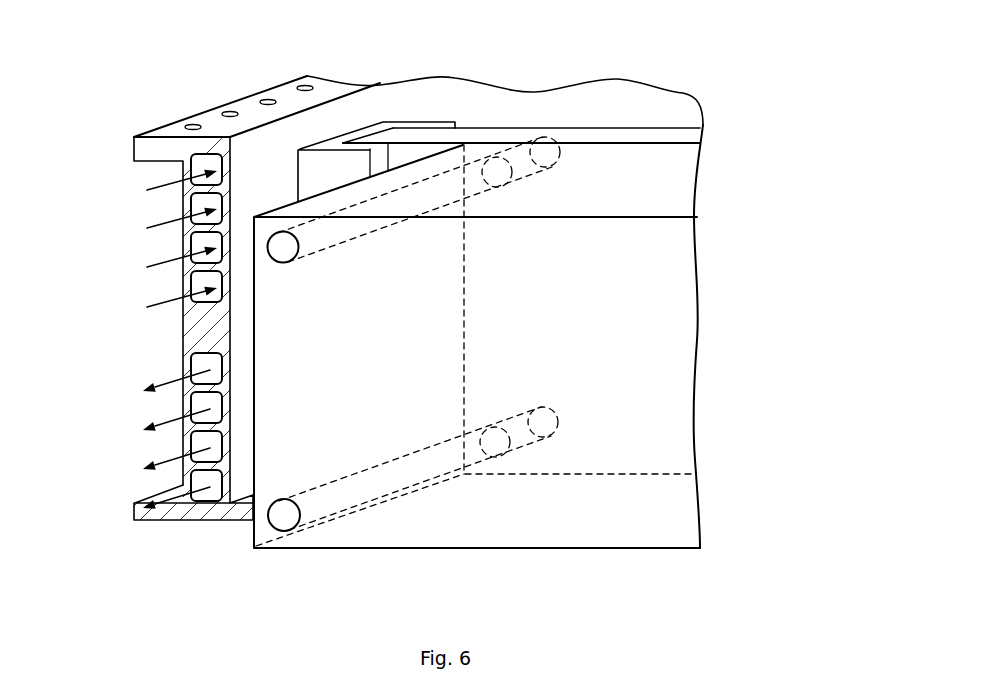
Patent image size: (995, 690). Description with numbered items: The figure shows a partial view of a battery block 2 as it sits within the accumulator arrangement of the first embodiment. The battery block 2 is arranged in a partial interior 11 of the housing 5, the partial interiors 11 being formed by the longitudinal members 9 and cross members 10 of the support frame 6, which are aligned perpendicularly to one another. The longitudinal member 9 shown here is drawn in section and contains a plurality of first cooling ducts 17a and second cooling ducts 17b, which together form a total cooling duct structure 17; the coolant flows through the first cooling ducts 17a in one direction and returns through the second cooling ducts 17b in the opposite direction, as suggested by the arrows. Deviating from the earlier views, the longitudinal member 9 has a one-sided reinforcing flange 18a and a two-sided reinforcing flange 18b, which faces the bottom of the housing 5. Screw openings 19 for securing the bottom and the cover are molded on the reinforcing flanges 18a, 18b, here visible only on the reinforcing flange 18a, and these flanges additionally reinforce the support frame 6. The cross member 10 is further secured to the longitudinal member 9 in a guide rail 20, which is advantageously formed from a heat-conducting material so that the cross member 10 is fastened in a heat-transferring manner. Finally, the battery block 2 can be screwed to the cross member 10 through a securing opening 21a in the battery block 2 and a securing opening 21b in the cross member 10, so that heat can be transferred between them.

The battery block 2 is at (682, 180).
The housing 5 is at (505, 64).
The support frame 6 is at (556, 84).
The longitudinal member 9 is at (279, 73).
The cross member 10 is at (487, 112).
The partial interior 11 is at (413, 152).
The total cooling duct structure 17 is at (243, 331).
The first cooling duct 17a is at (222, 287).
The second cooling duct 17b is at (222, 486).
The one-sided reinforcing flange 18a is at (148, 152).
The two-sided reinforcing flange 18b is at (146, 514).
The screw opening 19 is at (226, 112).
The guide rail 20 is at (363, 133).
The securing opening in the battery block 21a is at (283, 254).
The securing opening in the cross member 21b is at (548, 135).